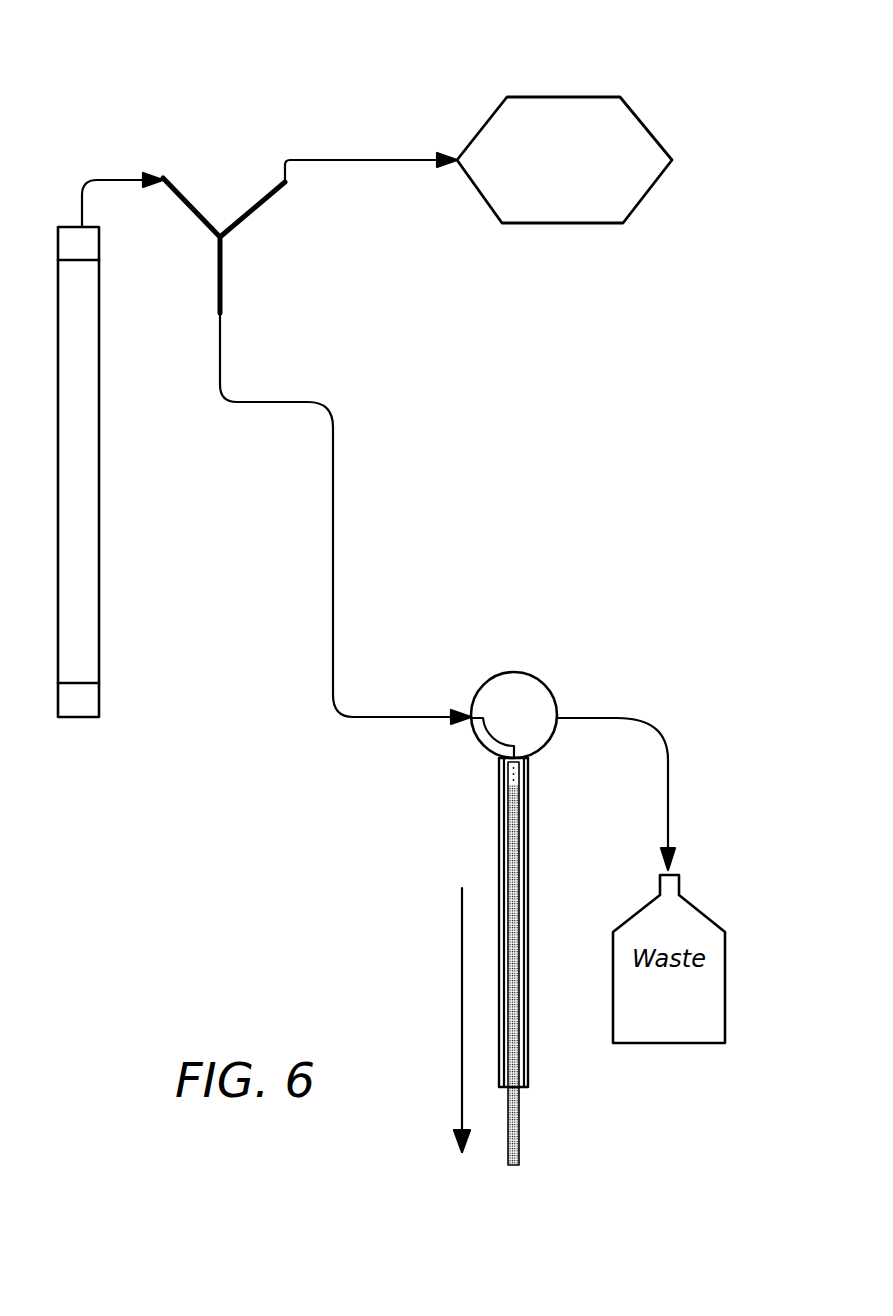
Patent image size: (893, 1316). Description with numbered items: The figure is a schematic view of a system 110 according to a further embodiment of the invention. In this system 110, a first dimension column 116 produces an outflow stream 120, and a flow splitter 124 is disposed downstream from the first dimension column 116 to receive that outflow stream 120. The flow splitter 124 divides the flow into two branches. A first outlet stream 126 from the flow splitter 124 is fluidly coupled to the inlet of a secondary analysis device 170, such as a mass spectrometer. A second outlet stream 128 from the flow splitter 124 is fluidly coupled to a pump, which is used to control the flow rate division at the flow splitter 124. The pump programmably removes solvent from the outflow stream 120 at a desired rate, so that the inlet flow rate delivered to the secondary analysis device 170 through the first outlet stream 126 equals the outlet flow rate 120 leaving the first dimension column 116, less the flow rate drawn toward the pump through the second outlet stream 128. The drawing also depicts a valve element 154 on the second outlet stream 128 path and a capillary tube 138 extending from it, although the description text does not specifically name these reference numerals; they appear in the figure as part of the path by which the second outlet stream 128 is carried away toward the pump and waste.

The system 110 is at (190, 88).
The first dimension column 116 is at (99, 415).
The outflow stream 120 is at (91, 182).
The flow splitter 124 is at (200, 251).
The first outlet stream 126 is at (280, 180).
The second outlet stream 128 is at (222, 382).
The capillary tube 138 is at (529, 902).
The valve 154 is at (553, 702).
The secondary analysis device 170 is at (637, 127).